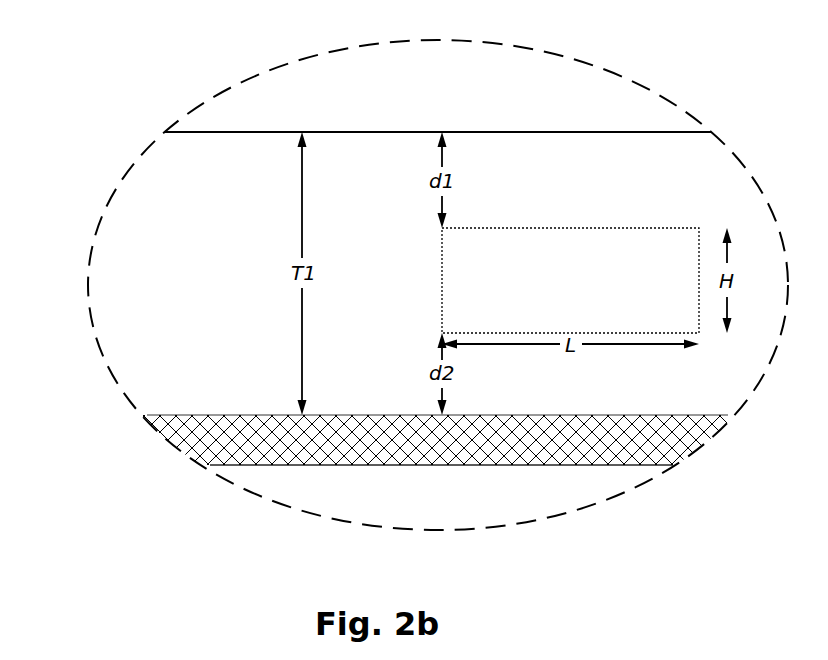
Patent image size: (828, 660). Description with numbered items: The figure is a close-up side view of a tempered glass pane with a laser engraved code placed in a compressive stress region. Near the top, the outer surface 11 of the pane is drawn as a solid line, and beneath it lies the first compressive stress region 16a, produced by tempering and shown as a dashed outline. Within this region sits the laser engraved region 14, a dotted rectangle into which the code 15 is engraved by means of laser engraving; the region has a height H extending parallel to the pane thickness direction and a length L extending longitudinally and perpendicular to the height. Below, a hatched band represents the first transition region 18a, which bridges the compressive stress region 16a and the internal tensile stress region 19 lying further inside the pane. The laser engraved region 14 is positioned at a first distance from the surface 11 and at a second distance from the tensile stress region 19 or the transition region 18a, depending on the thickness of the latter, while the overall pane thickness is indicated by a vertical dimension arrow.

The outer surface 11 is at (432, 132).
The laser engraved region 14 is at (508, 257).
The code 15 is at (560, 290).
The first compressive stress region 16a is at (133, 240).
The first transition region 18a is at (200, 440).
The internal tensile stress region 19 is at (373, 480).